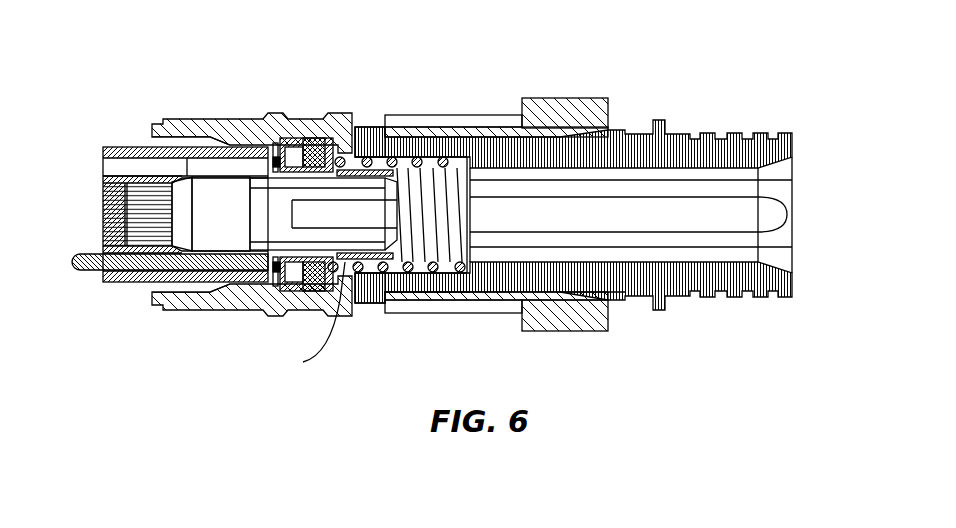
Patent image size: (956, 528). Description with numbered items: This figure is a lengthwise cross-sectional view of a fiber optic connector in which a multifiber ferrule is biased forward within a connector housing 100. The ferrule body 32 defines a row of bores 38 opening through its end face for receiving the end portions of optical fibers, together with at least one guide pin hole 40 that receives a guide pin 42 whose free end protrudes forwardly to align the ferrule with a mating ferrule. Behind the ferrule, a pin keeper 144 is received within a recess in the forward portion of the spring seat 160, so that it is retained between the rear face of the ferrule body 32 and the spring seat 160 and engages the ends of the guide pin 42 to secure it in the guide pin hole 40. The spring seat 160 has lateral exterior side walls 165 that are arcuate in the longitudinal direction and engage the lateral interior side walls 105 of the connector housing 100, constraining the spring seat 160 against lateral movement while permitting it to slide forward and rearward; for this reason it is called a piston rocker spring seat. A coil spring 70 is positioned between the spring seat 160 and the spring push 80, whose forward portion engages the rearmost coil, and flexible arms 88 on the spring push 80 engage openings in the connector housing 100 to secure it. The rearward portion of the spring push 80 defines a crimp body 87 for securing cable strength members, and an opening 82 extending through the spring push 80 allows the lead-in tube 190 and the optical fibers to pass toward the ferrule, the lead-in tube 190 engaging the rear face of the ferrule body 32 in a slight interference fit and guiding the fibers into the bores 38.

The ferrule body 32 is at (122, 147).
The guide pin hole 40 is at (107, 166).
The bores 38 is at (103, 220).
The guide pin 42 is at (88, 273).
The pin keeper 144 is at (258, 145).
The lateral exterior side walls 165 is at (300, 138).
The spring seat 160 is at (317, 133).
The lead-in tube 190 is at (308, 318).
The coil spring 70 is at (447, 177).
The crimp body 87 is at (722, 133).
The opening 82 is at (782, 190).
The lateral interior side walls 105 is at (355, 137).
The connector housing 100 is at (493, 115).
The flexible arms 88 is at (432, 278).
The spring push 80 is at (617, 280).